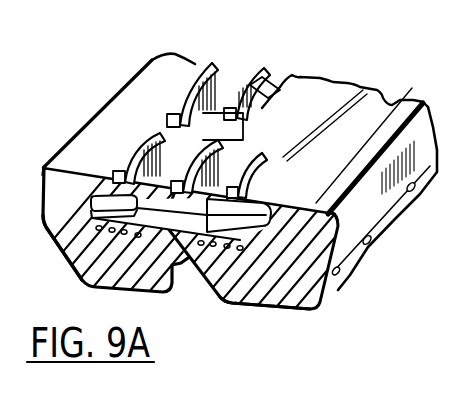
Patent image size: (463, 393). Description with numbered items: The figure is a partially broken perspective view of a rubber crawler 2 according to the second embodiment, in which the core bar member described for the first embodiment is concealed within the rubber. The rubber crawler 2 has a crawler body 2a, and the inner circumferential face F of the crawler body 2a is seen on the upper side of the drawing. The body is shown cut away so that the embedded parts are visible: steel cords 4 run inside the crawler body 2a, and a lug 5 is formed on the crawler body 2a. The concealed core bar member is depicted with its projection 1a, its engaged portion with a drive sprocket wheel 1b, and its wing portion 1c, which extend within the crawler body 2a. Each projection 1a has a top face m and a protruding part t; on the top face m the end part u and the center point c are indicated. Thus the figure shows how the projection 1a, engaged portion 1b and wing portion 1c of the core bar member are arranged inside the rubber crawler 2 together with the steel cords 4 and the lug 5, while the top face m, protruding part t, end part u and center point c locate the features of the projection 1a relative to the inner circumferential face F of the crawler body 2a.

The rubber crawler 2 is at (118, 70).
The crawler body 2a is at (65, 151).
The projection 1a is at (118, 167).
The engaged portion with a drive sprocket wheel 1b is at (190, 255).
The wing portion 1c is at (64, 232).
The steel cords 4 is at (243, 247).
The lug 5 is at (332, 286).
The top face m is at (135, 157).
The end part u is at (165, 117).
The center point c is at (170, 76).
The protruding part t is at (232, 74).
The inner circumferential face F is at (370, 118).